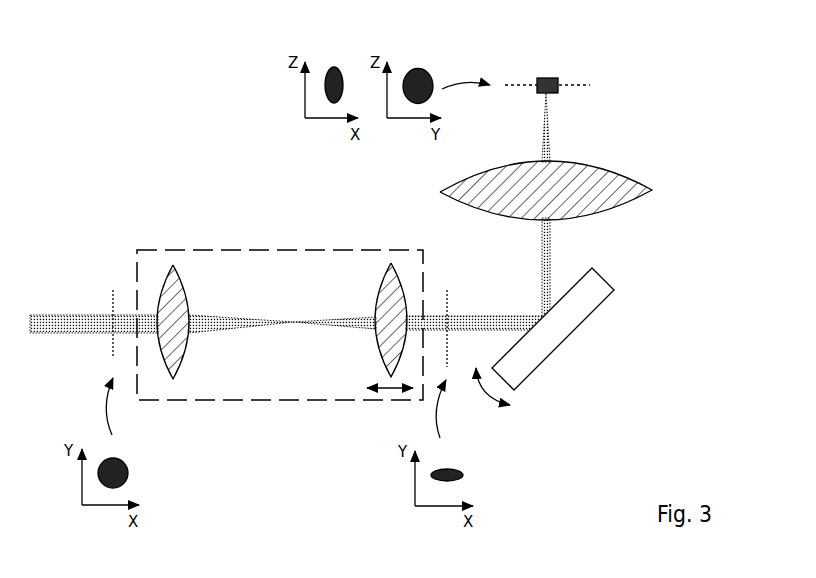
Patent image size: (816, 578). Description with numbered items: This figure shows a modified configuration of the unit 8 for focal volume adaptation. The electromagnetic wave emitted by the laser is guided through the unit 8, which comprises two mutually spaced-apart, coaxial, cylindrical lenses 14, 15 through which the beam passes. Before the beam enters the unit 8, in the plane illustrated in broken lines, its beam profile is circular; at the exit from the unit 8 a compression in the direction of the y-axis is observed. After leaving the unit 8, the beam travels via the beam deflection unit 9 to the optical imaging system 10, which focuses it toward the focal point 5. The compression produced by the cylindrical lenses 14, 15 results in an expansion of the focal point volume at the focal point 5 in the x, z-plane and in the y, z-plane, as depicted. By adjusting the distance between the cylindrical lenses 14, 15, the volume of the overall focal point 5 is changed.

The focus 5 is at (566, 74).
The unit for changing the focal point volume 8 is at (229, 410).
The beam deflection unit 9 is at (600, 325).
The optical imaging system 10 is at (432, 190).
The cylindrical lens 14 is at (150, 278).
The cylindrical lens 15 is at (368, 276).